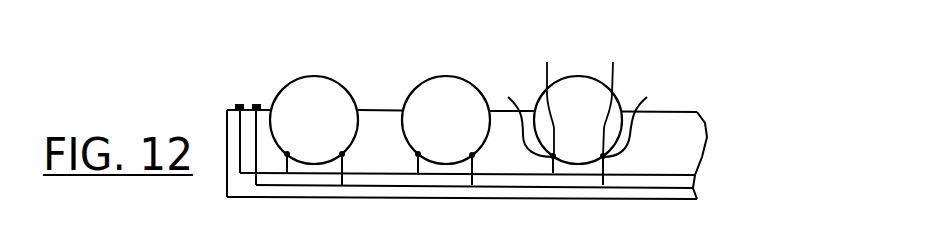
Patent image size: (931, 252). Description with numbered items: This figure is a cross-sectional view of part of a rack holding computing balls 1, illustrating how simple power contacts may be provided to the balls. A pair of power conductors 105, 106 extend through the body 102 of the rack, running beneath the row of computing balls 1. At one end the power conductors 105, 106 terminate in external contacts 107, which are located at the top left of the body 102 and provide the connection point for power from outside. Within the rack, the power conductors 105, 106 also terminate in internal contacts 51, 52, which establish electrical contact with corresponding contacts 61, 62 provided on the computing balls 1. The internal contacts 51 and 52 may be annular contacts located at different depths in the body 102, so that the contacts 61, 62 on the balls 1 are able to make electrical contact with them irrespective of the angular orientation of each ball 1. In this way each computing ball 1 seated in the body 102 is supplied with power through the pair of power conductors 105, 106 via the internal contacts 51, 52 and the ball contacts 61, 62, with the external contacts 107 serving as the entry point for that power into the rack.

The computing ball 1 is at (423, 110).
The internal contact 51 is at (521, 111).
The internal contact 52 is at (638, 111).
The contact 61 is at (547, 92).
The contact 62 is at (612, 92).
The body 102 is at (677, 156).
The power conductor 105 is at (693, 180).
The power conductor 106 is at (693, 189).
The external contact 107 is at (258, 105).